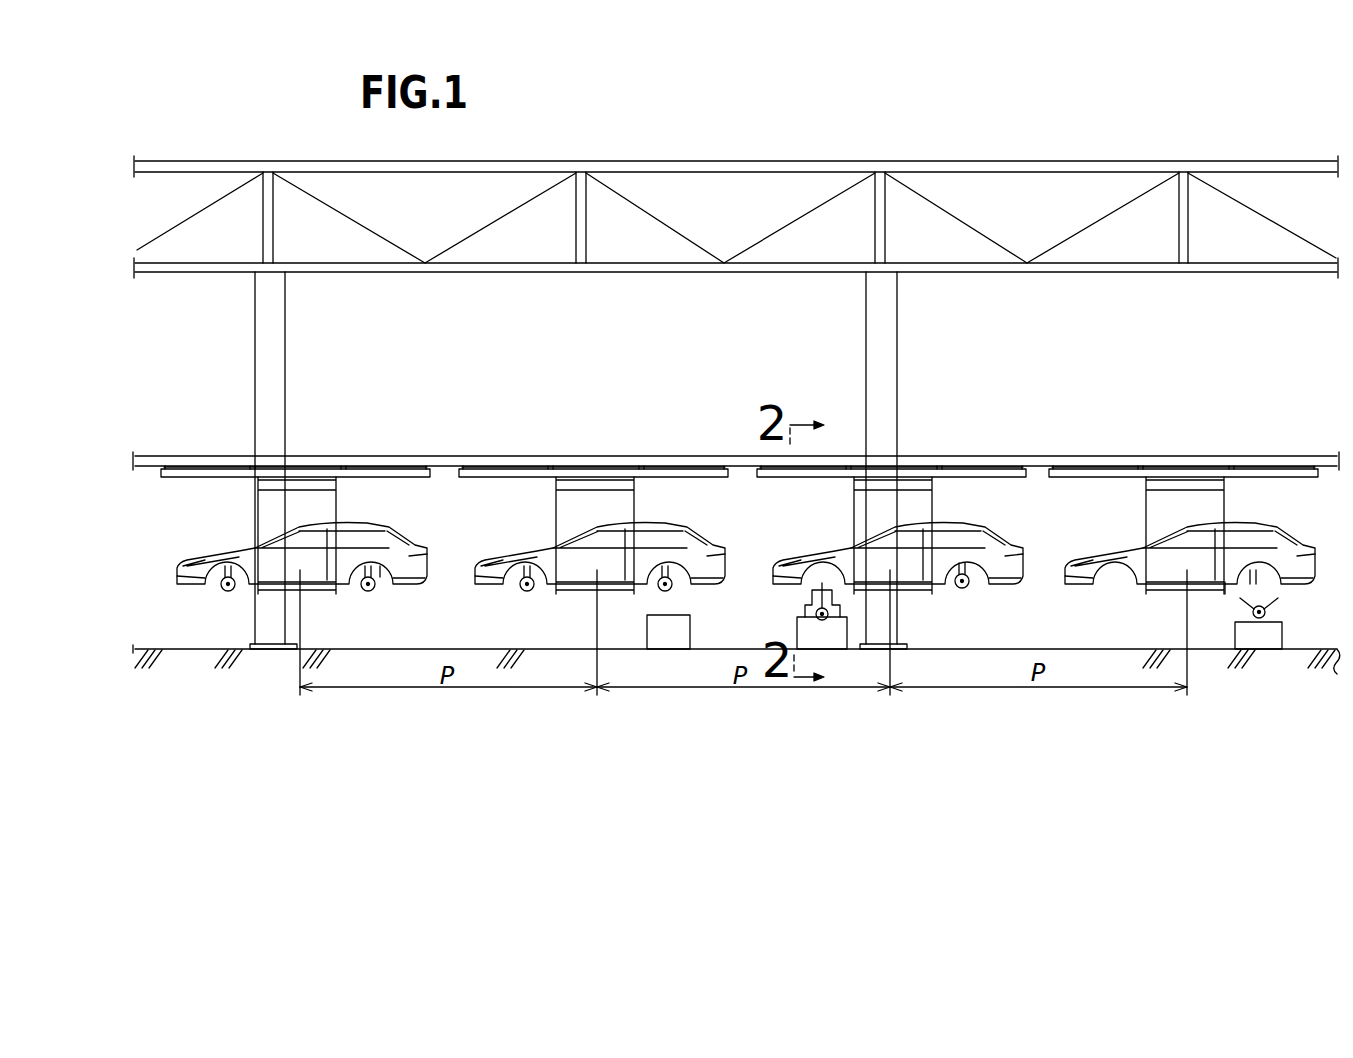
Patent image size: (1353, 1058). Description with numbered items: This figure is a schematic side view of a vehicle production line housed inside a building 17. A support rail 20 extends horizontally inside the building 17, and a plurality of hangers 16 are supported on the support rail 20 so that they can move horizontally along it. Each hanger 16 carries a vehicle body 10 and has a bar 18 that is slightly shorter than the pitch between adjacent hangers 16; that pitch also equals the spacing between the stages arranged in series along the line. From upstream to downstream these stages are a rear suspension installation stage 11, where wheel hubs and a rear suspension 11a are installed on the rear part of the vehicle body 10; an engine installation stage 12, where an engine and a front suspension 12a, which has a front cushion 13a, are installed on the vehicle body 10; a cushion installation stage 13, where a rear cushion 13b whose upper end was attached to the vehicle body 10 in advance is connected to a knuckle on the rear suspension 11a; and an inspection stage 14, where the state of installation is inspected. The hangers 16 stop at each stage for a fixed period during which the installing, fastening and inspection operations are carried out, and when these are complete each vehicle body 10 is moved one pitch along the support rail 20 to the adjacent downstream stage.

The vehicle body 10 is at (203, 548).
The rear suspension installation stage 11 is at (1195, 706).
The rear suspension 11a is at (370, 590).
The engine installation stage 12 is at (915, 706).
The front suspension 12a is at (230, 590).
The cushion installation stage 13 is at (622, 714).
The front cushion 13a is at (222, 588).
The rear cushion 13b is at (383, 588).
The inspection stage 14 is at (328, 714).
The hanger 16 is at (377, 494).
The building 17 is at (788, 163).
The bar 18 is at (388, 482).
The support rail 20 is at (553, 465).